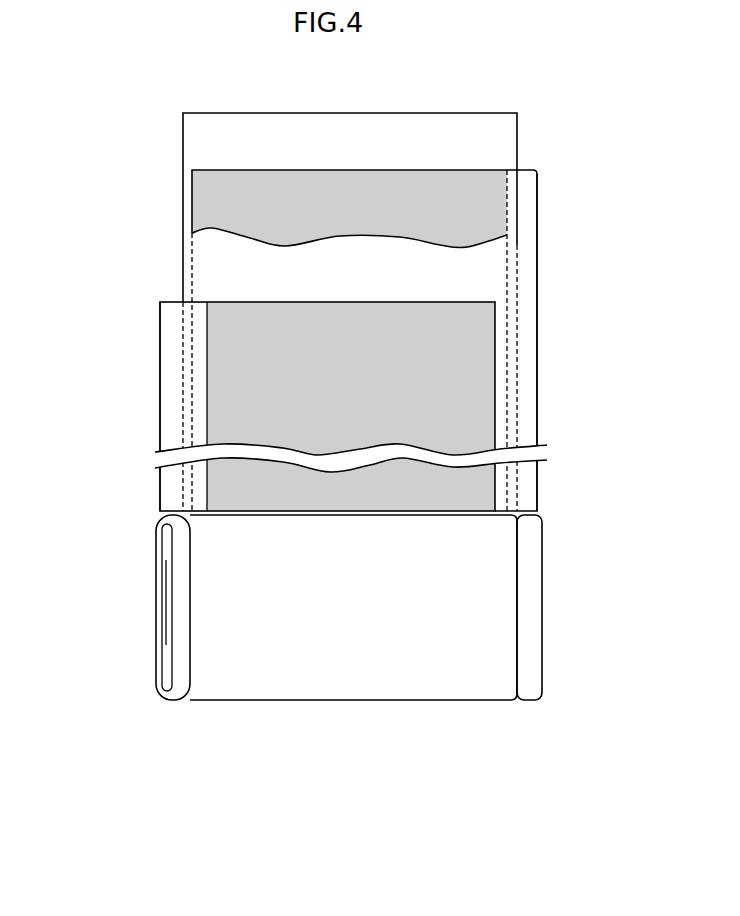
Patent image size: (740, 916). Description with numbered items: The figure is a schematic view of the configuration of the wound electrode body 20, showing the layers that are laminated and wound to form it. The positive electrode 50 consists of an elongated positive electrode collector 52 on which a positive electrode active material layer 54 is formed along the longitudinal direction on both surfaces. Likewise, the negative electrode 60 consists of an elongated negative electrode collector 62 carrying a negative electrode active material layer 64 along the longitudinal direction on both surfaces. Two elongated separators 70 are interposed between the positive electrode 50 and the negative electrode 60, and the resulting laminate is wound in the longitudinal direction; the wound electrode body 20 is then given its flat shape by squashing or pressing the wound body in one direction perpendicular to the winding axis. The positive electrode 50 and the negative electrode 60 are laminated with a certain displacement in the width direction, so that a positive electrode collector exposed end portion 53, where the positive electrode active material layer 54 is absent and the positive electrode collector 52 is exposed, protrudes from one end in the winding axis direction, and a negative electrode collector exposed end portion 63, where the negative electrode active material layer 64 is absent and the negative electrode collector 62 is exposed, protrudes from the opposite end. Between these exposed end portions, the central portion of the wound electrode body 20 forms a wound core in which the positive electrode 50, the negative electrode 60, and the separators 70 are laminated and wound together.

The wound electrode body 20 is at (410, 678).
The positive electrode 50 is at (160, 373).
The positive electrode collector 52 is at (158, 437).
The positive electrode collector exposed end portion 53 is at (177, 408).
The positive electrode active material layer 54 is at (222, 322).
The negative electrode 60 is at (538, 247).
The negative electrode collector 62 is at (538, 350).
The negative electrode collector exposed end portion 63 is at (523, 317).
The negative electrode active material layer 64 is at (502, 195).
The separator 70 is at (203, 135).